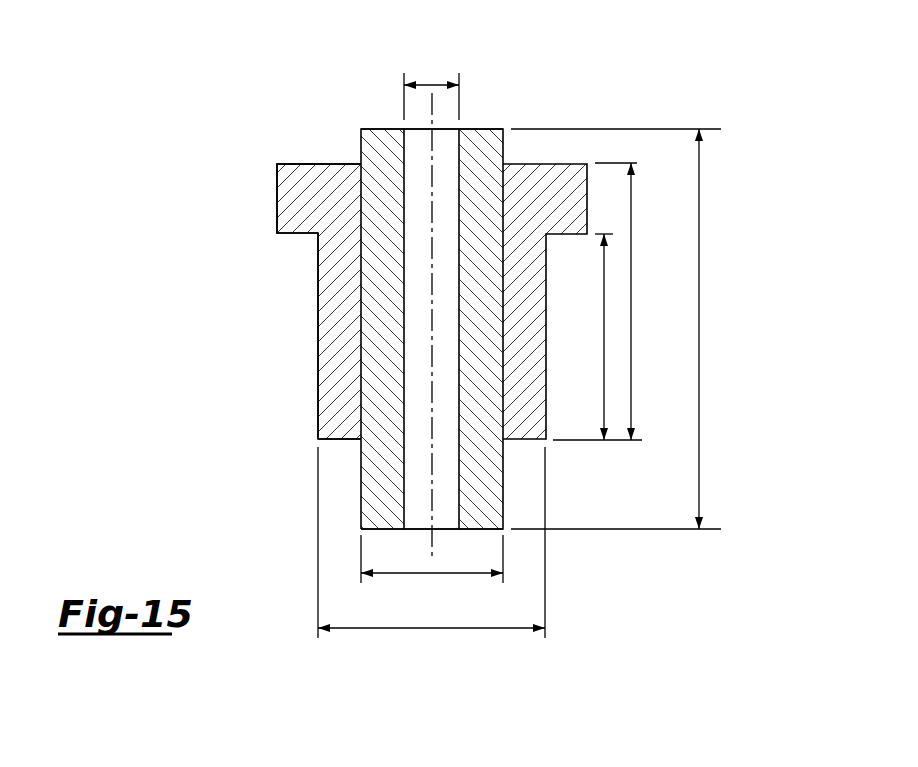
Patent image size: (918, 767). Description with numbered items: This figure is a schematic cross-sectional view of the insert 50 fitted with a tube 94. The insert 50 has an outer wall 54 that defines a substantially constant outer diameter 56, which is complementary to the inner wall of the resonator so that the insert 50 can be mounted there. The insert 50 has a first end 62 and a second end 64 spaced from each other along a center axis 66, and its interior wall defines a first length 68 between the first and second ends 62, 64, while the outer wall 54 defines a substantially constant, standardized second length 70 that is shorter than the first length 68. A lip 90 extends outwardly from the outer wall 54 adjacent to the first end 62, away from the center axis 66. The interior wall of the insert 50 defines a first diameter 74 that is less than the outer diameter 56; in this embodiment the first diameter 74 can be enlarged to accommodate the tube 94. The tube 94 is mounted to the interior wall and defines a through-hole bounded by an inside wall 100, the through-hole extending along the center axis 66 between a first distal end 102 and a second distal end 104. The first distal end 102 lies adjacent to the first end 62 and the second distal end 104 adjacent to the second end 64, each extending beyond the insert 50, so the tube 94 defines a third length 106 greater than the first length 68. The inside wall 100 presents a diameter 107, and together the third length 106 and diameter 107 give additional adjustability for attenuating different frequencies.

The insert 50 is at (326, 337).
The outer wall 54 is at (318, 307).
The outer diameter 56 is at (388, 630).
The first end 62 is at (320, 164).
The second end 64 is at (346, 440).
The center axis 66 is at (430, 548).
The first length 68 is at (631, 352).
The second length 70 is at (604, 320).
The first diameter 74 is at (415, 575).
The lip 90 is at (277, 200).
The tube 94 is at (487, 132).
The inside wall 100 is at (447, 167).
The first distal end 102 is at (388, 128).
The second distal end 104 is at (468, 532).
The third length 106 is at (699, 275).
The diameter 107 is at (433, 84).